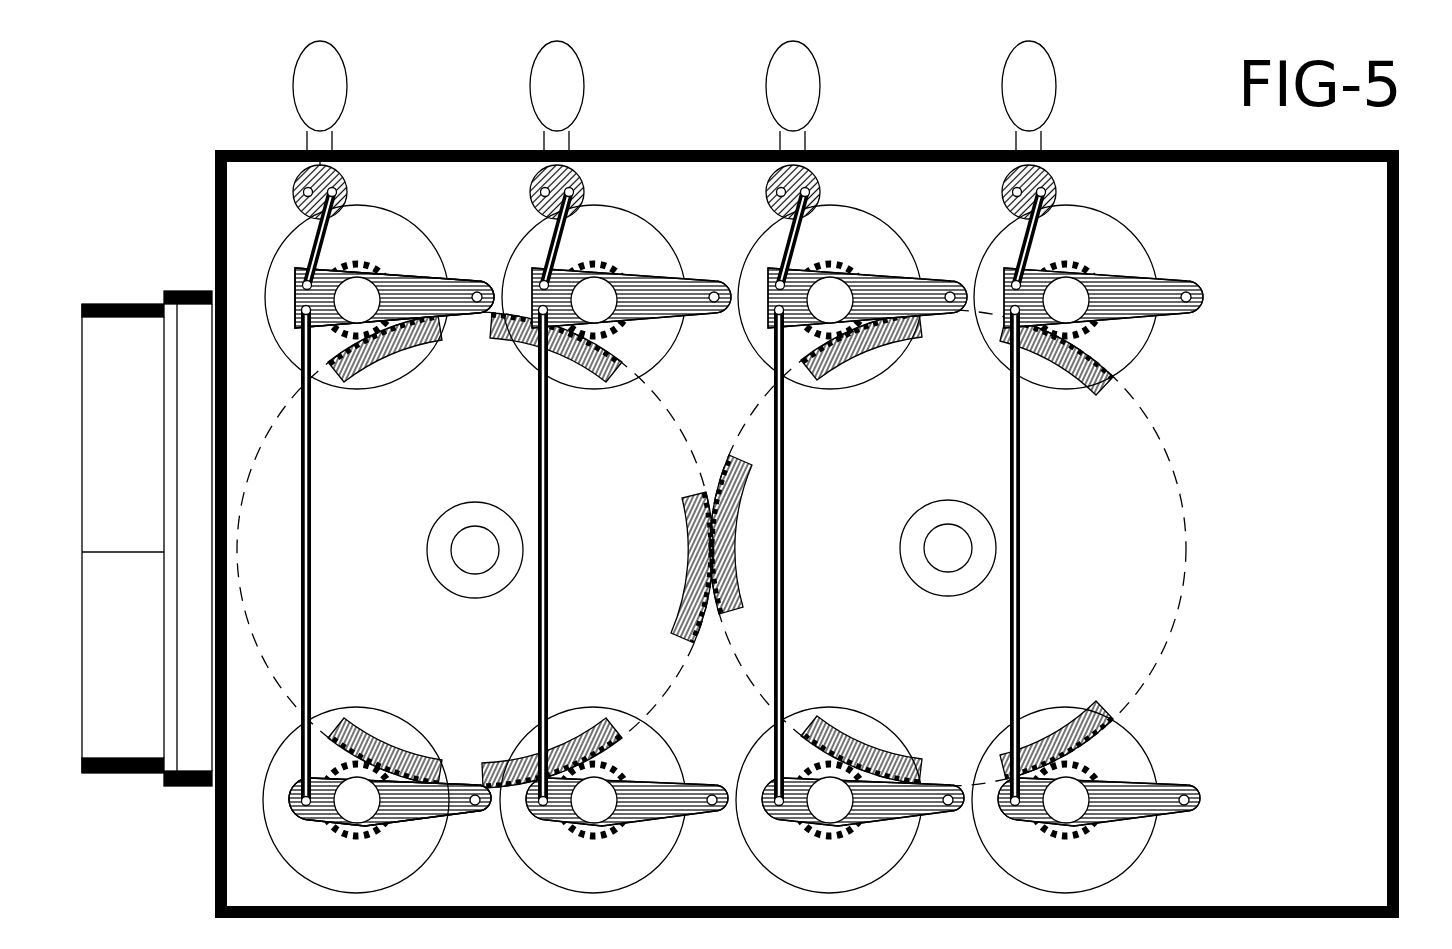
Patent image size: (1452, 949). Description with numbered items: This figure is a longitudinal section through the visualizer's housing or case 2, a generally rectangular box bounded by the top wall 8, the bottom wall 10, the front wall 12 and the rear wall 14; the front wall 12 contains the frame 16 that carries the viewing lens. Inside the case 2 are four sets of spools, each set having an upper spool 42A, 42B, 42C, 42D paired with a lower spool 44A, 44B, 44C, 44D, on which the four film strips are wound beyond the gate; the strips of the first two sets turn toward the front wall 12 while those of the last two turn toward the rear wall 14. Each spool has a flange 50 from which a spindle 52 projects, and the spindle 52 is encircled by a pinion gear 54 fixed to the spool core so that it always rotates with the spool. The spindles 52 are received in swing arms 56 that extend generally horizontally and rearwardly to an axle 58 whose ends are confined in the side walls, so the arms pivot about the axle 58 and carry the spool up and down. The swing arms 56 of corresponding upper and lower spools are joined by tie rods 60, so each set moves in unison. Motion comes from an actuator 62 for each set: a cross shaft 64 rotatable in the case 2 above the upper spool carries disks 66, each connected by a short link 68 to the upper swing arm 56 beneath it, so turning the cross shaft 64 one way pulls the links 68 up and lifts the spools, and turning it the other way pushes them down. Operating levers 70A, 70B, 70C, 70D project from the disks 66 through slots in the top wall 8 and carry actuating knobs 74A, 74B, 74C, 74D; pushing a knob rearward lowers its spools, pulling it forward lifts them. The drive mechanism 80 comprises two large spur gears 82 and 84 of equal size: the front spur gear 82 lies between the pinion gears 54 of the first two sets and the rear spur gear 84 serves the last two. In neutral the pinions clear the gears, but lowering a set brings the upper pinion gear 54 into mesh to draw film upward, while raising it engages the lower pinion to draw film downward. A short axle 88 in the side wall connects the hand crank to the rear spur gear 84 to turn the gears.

The housing or case 2 is at (226, 148).
The top wall 8 is at (968, 148).
The bottom wall 10 is at (1262, 903).
The front wall 12 is at (214, 800).
The rear wall 14 is at (1400, 395).
The frame 16 is at (108, 775).
The upper spool 42A is at (405, 212).
The upper spool 42B is at (653, 212).
The upper spool 42C is at (891, 208).
The upper spool 42D is at (1130, 208).
The lower spool 44A is at (443, 843).
The lower spool 44B is at (682, 840).
The lower spool 44C is at (913, 845).
The lower spool 44D is at (1151, 846).
The flange 50 is at (298, 268).
The spindle 52 is at (372, 305).
The pinion gear 54 is at (358, 264).
The swing arm 56 is at (445, 283).
The axle 58 is at (477, 292).
The tie rod 60 is at (312, 433).
The actuator 62 is at (300, 140).
The cross shaft 64 is at (304, 193).
The disk 66 is at (313, 177).
The short link 68 is at (317, 237).
The operating lever 70A is at (306, 150).
The operating lever 70B is at (545, 138).
The operating lever 70C is at (782, 137).
The operating lever 70D is at (1007, 143).
The actuating knob 74A is at (333, 83).
The actuating knob 74B is at (563, 80).
The actuating knob 74C is at (797, 78).
The actuating knob 74D is at (1032, 64).
The drive mechanism 80 is at (1163, 458).
The front spur gear 82 is at (632, 516).
The rear spur gear 84 is at (852, 518).
The short axle 88 is at (955, 540).